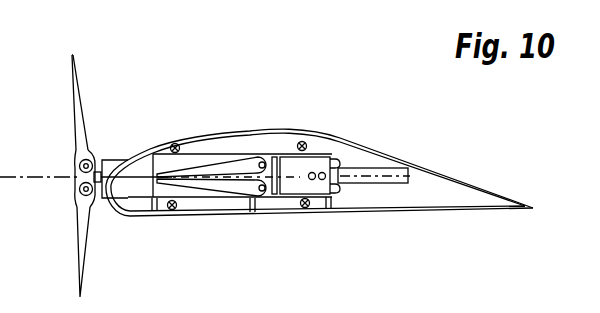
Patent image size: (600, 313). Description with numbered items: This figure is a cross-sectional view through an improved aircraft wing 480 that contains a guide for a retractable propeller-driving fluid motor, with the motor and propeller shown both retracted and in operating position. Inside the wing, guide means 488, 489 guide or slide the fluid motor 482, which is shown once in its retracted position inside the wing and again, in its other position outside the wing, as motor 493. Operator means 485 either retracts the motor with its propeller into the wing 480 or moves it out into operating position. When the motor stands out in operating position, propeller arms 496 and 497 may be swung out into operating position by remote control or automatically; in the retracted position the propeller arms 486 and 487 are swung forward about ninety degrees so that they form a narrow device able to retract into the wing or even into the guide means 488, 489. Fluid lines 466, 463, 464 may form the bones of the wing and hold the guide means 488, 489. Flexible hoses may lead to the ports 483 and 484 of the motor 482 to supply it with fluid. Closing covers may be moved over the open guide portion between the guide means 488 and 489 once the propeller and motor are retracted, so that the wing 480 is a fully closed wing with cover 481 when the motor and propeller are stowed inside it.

The fluid line 463 is at (304, 205).
The fluid line 464 is at (302, 146).
The fluid line 466 is at (175, 148).
The wing 480 is at (373, 200).
The cover 481 is at (460, 181).
The fluid motor 482 is at (291, 165).
The port 483 is at (311, 178).
The port 484 is at (322, 179).
The operator means 485 is at (390, 173).
The propeller arm 486 is at (217, 185).
The propeller arm 487 is at (223, 170).
The guide means 488 is at (245, 200).
The guide means 489 is at (251, 197).
The motor in operating position 493 is at (110, 160).
The propeller arm 496 is at (86, 257).
The propeller arm 497 is at (80, 105).